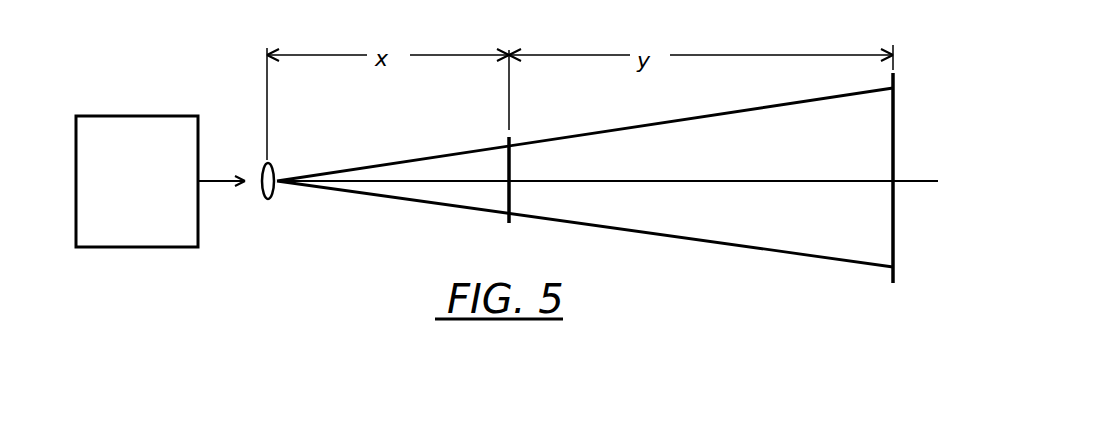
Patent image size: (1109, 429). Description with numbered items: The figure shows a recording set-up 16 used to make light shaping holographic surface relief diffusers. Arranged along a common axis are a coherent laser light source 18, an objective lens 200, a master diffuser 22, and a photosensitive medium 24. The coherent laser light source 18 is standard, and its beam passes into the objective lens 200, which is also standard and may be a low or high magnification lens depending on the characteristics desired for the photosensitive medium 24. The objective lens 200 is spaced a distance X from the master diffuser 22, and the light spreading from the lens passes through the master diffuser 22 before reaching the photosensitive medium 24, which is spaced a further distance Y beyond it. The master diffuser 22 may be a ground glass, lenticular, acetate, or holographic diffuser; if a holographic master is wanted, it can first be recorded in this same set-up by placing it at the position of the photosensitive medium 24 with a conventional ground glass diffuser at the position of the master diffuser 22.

The coherent laser light source 18 is at (160, 116).
The objective lens 200 is at (271, 200).
The recording set-up 16 is at (367, 155).
The master diffuser 22 is at (510, 145).
The photosensitive medium 24 is at (893, 80).